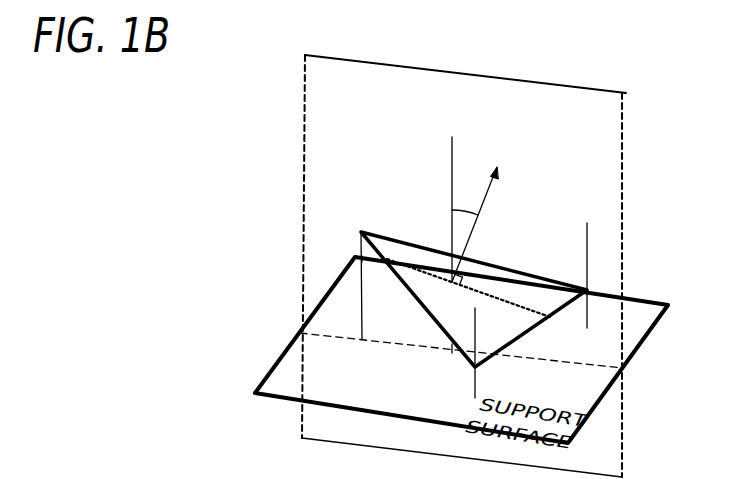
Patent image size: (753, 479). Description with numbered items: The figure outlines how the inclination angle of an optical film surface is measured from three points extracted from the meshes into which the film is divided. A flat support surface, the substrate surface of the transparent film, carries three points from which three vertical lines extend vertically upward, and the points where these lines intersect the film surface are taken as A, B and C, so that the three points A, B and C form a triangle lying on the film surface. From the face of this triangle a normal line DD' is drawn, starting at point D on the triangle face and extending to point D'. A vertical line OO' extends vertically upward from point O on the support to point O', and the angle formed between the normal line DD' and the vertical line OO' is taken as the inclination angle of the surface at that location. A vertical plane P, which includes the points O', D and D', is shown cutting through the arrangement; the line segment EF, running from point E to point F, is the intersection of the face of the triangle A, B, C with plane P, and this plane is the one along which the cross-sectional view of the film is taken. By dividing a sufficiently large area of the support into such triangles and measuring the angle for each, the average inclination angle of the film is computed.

The plane P is at (464, 266).
The point A is at (355, 270).
The point B is at (489, 353).
The point C is at (598, 275).
The point D is at (452, 294).
The point E is at (375, 274).
The point F is at (475, 301).
The point O is at (448, 362).
The point O' is at (454, 198).
The point D' is at (485, 211).